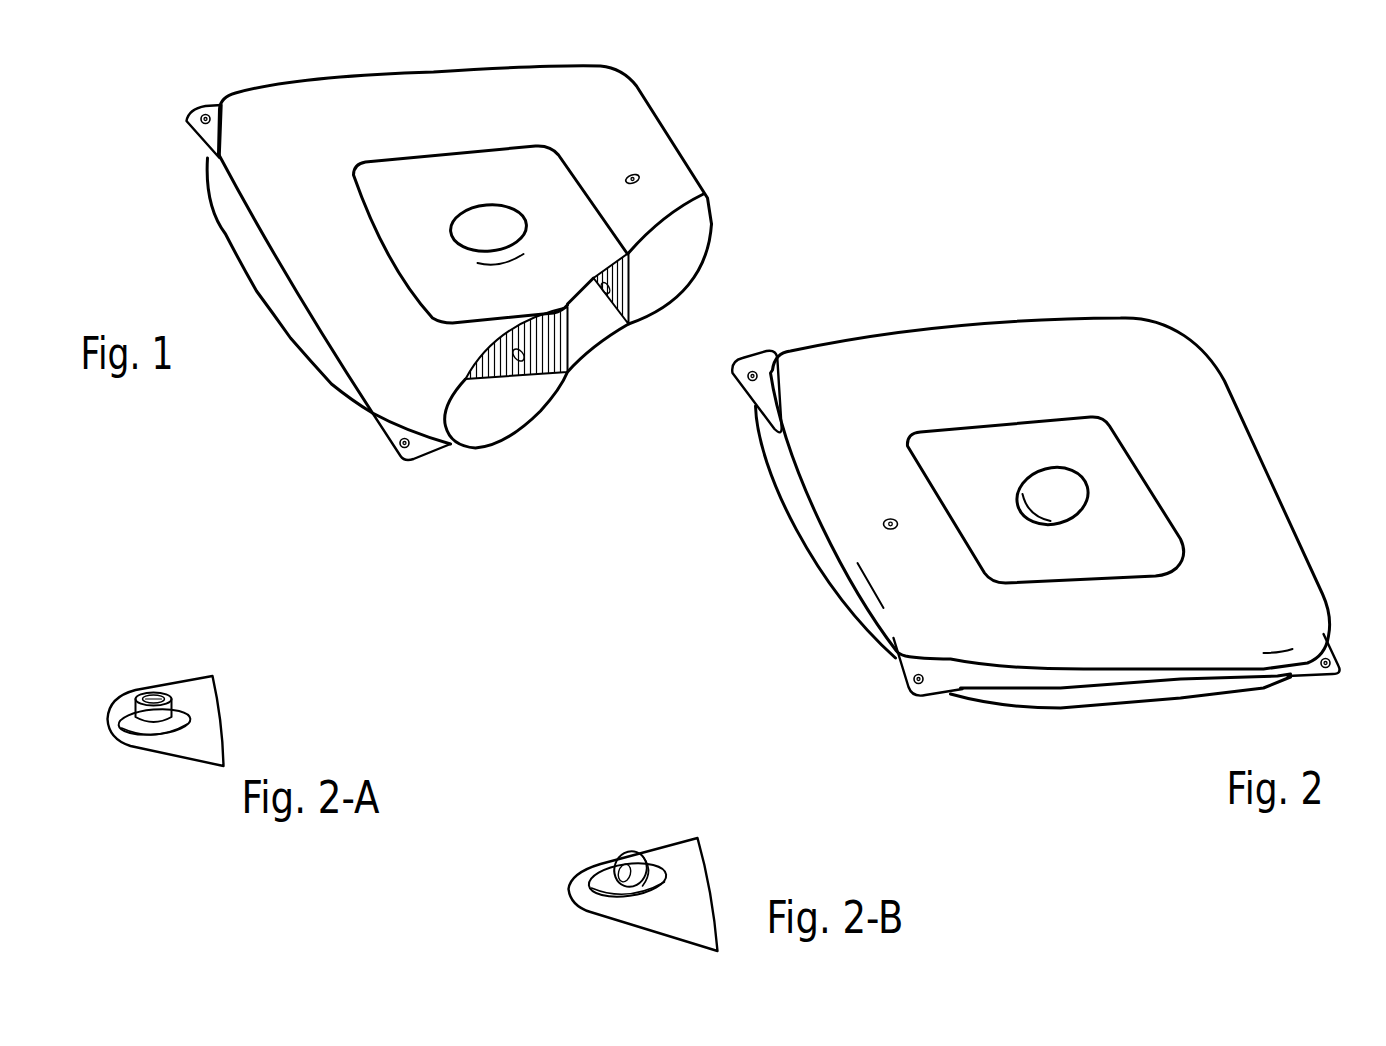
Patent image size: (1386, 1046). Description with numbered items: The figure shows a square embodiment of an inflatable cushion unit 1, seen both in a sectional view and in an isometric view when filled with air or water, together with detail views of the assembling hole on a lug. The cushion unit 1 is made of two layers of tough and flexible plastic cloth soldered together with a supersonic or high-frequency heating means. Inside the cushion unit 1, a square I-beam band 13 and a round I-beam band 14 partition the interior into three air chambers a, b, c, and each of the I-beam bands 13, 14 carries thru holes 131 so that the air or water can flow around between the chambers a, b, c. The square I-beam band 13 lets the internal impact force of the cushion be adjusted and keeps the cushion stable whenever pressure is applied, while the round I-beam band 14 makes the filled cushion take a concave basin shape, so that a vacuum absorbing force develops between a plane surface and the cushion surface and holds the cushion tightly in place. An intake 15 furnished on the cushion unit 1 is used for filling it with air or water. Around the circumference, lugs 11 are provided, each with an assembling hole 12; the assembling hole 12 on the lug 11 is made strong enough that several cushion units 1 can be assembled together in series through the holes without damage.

In FIG. 1, the cushion unit 1 is at (435, 88).
In FIG. 2, the cushion unit 1 is at (1277, 550).
In FIG. 1, the lug 11 is at (195, 130).
In FIG. 2, the lug 11 is at (1310, 677).
In FIG. 2-A, the lug 11 is at (182, 750).
In FIG. 2-B, the lug 11 is at (662, 920).
In FIG. 1, the assembling hole 12 is at (205, 110).
In FIG. 2, the assembling hole 12 is at (1330, 660).
In FIG. 2-A, the assembling hole 12 is at (158, 691).
In FIG. 2-B, the assembling hole 12 is at (616, 868).
In FIG. 1, the square I-beam band 13 is at (377, 246).
In FIG. 2, the square I-beam band 13 is at (1078, 414).
In FIG. 1, the round I-beam band 14 is at (498, 204).
In FIG. 2, the round I-beam band 14 is at (1088, 484).
In FIG. 1, the intake 15 is at (640, 177).
In FIG. 2, the intake 15 is at (884, 528).
In FIG. 1, the thru hole 131 is at (613, 287).
In FIG. 1, the air chamber a is at (683, 264).
In FIG. 1, the air chamber b is at (593, 347).
In FIG. 1, the air chamber c is at (463, 218).